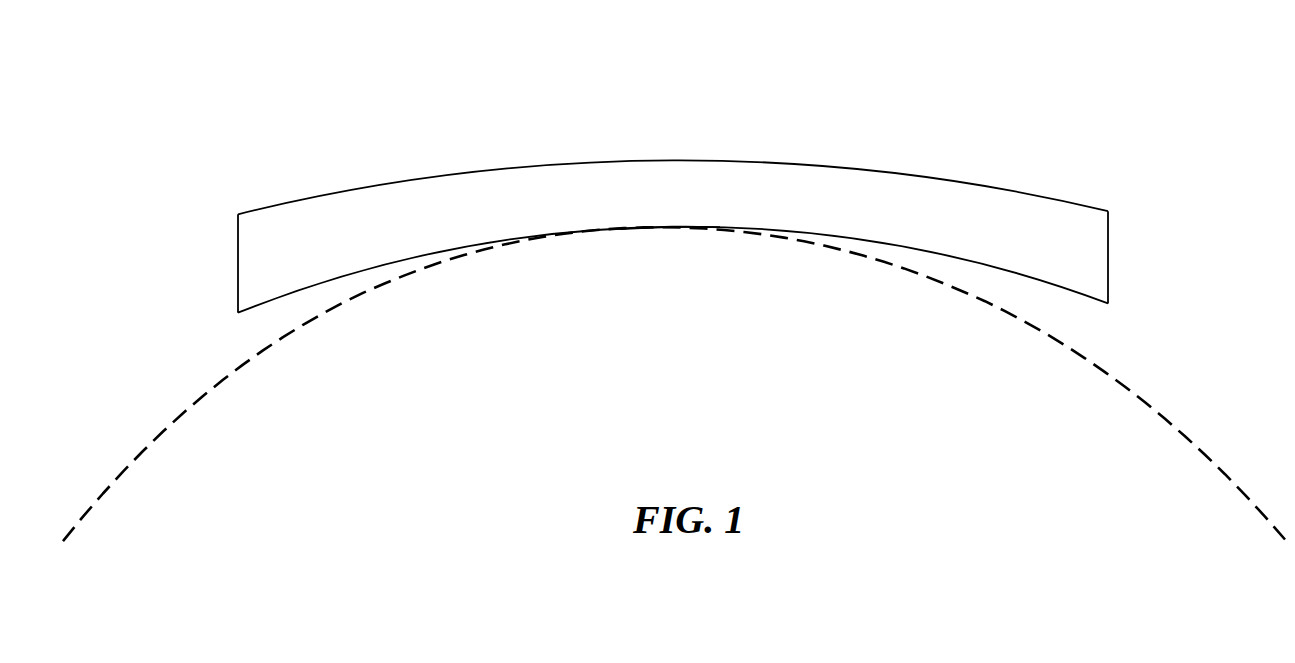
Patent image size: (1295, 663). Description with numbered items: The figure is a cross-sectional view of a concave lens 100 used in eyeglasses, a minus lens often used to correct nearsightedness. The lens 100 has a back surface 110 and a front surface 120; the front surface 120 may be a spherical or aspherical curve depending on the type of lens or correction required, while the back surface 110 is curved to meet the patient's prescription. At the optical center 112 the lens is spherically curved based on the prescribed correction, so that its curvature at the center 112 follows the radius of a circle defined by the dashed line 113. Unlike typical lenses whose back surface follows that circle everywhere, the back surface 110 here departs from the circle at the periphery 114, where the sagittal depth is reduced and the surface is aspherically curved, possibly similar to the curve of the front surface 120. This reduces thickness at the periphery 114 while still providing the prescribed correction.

The concave lens 100 is at (674, 202).
The back surface 110 is at (886, 231).
The optical center 112 is at (678, 244).
The line 113 is at (1130, 378).
The periphery 114 is at (303, 304).
The front surface 120 is at (1028, 182).